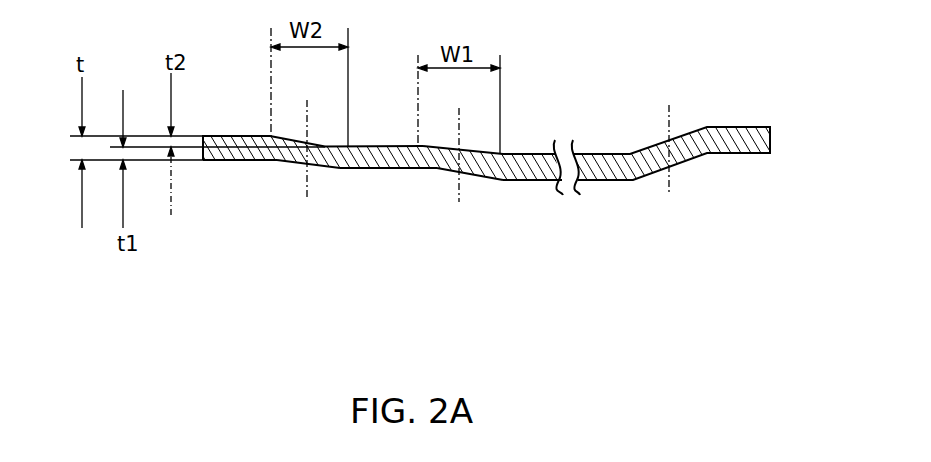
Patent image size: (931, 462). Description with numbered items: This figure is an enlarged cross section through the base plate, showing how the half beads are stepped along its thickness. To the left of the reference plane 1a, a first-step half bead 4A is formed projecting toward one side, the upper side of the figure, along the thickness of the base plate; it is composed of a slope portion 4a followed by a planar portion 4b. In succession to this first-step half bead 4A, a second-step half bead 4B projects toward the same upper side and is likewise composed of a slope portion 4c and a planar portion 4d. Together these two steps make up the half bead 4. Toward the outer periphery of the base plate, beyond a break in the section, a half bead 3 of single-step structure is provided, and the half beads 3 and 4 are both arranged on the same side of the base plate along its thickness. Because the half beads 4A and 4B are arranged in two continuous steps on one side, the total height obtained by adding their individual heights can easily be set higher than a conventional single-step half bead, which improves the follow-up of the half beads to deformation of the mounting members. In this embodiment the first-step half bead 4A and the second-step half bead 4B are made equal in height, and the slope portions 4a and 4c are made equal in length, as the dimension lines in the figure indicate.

The reference plane 1a is at (537, 182).
The half bead 3 is at (685, 178).
The half bead 4 is at (457, 243).
The first-step half bead 4A is at (414, 217).
The second-step half bead 4B is at (271, 212).
The slope portion 4a is at (437, 172).
The planar portion 4b is at (383, 170).
The slope portion 4c is at (292, 163).
The planar portion 4d is at (233, 163).